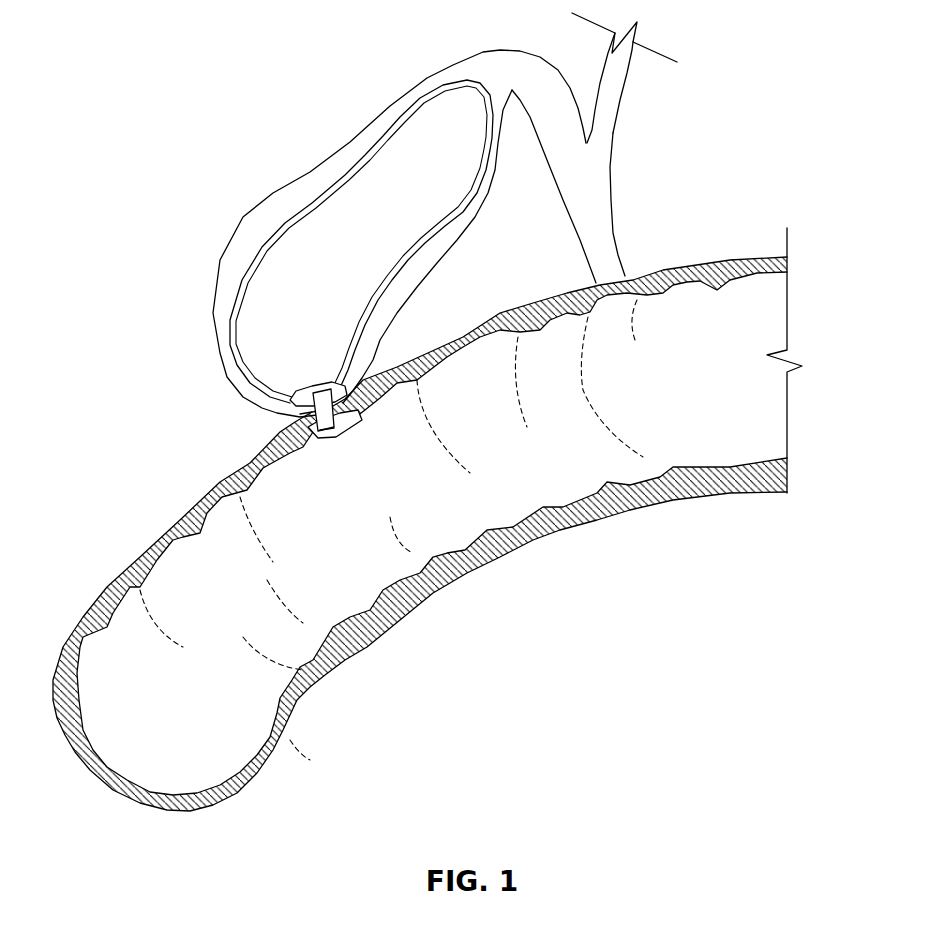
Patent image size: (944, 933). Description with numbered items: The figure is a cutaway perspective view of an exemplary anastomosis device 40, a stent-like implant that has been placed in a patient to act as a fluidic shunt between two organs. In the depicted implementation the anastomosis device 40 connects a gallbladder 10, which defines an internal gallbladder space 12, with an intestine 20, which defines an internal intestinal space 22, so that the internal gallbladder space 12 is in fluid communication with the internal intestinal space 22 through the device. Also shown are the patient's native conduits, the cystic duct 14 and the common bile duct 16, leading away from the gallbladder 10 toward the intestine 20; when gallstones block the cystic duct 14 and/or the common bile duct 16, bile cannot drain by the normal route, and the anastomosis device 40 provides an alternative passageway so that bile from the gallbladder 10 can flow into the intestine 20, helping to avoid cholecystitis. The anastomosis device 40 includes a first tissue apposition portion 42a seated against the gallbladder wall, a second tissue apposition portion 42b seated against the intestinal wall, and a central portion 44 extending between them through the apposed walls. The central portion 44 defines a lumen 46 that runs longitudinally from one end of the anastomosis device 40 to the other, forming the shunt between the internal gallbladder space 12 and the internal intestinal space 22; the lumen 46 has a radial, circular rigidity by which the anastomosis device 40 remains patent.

The gallbladder 10 is at (262, 212).
The internal gallbladder space 12 is at (312, 284).
The cystic duct 14 is at (557, 80).
The common bile duct 16 is at (612, 193).
The intestine 20 is at (178, 522).
The internal intestinal space 22 is at (426, 507).
The anastomosis device 40 is at (298, 380).
The first tissue apposition portion 42a is at (296, 392).
The second tissue apposition portion 42b is at (315, 437).
The central portion 44 is at (310, 418).
The lumen 46 is at (335, 438).